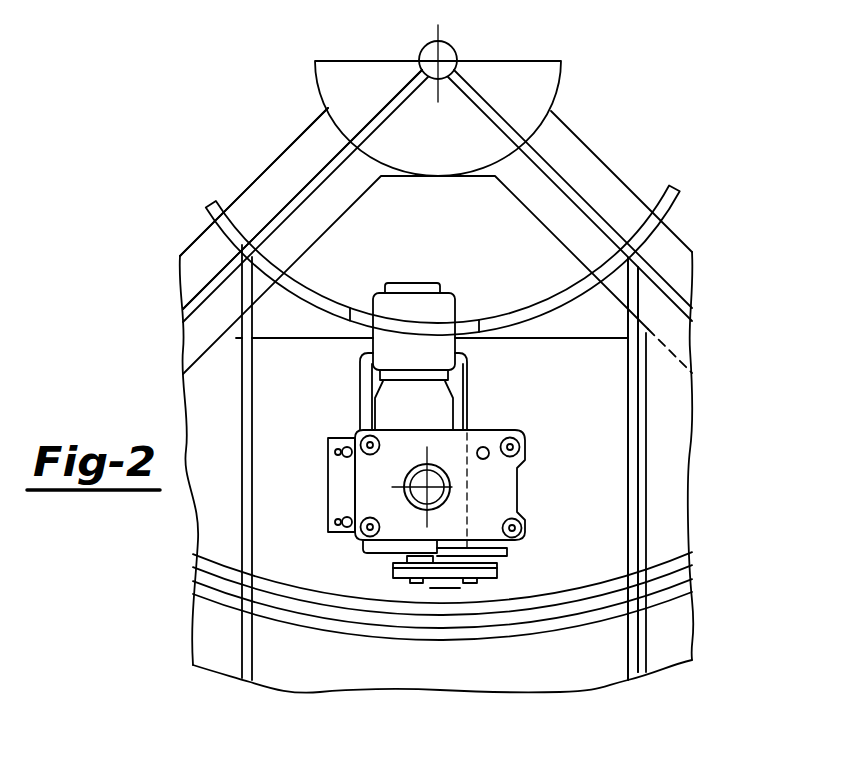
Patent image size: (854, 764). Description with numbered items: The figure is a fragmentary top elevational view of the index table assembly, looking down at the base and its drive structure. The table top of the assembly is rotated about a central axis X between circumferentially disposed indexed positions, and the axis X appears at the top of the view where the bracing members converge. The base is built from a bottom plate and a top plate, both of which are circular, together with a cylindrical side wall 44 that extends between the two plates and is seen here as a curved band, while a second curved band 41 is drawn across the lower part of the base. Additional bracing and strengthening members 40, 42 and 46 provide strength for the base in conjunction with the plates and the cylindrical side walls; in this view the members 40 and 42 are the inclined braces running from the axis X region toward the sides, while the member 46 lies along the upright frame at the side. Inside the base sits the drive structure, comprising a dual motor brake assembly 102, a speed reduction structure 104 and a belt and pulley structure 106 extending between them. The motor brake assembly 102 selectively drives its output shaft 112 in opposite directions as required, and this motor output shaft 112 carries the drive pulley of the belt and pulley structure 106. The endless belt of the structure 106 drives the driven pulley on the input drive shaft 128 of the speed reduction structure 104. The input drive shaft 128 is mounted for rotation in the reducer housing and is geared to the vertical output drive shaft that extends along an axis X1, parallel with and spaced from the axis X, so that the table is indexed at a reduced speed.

The central axis X is at (440, 59).
The axis X1 is at (414, 474).
The bracing and strengthening member 40 is at (290, 200).
The lower guide track 41 is at (670, 562).
The bracing and strengthening member 42 is at (327, 222).
The cylindrical side wall 44 is at (545, 307).
The bracing and strengthening member 46 is at (628, 463).
The dual motor brake assembly 102 is at (365, 560).
The speed reduction structure 104 is at (498, 488).
The belt and pulley structure 106 is at (443, 589).
The output shaft 112 is at (412, 584).
The input drive shaft 128 is at (475, 583).